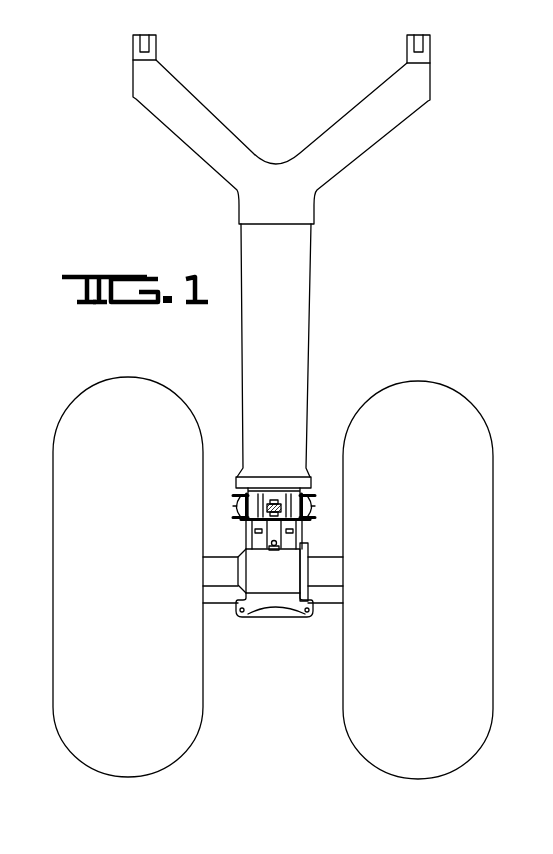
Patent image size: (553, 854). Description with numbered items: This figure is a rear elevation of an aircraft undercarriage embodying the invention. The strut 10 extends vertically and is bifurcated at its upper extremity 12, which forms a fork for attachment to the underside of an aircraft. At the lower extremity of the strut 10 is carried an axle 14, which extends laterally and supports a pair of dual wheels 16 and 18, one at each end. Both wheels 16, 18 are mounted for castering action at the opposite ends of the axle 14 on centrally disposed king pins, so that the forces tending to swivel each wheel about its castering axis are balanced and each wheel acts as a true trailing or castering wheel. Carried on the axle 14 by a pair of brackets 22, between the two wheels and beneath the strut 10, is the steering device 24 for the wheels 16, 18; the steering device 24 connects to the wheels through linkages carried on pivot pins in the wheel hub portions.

The strut 10 is at (311, 272).
The upper extremity 12 is at (347, 115).
The axle 14 is at (337, 598).
The wheel 16 is at (73, 450).
The wheel 18 is at (475, 445).
The brackets 22 is at (273, 611).
The steering device 24 is at (238, 555).